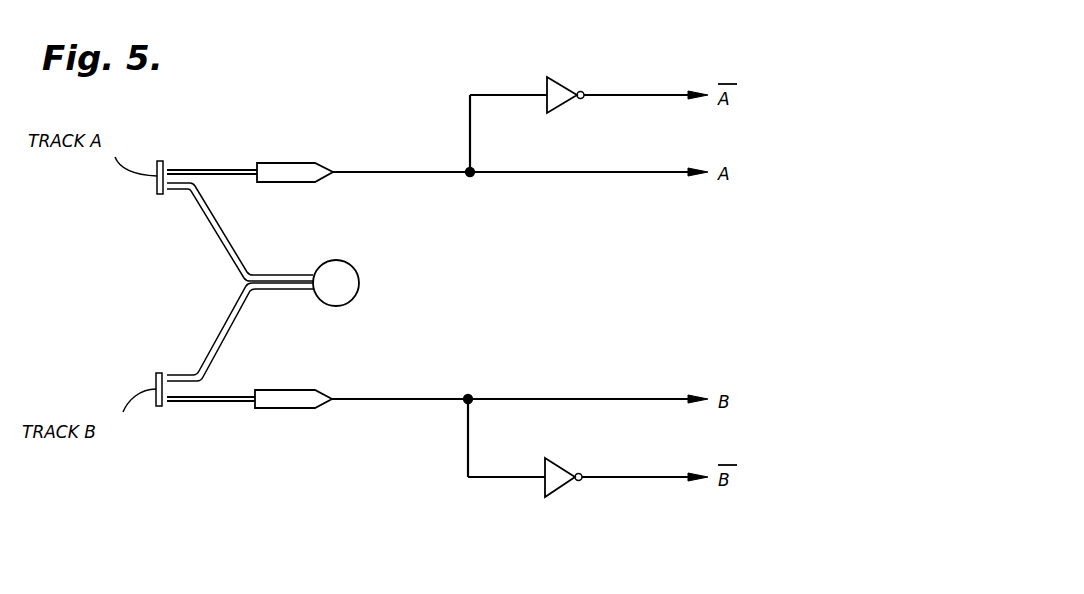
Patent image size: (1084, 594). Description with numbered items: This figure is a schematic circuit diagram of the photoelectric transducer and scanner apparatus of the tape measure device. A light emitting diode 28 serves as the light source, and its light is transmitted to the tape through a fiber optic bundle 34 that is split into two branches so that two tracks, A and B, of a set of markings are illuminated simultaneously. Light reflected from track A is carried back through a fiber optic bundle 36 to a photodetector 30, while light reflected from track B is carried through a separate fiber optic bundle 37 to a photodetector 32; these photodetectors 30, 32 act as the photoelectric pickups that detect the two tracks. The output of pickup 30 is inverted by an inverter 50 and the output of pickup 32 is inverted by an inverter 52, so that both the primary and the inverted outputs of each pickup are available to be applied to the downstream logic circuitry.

The light emitting diode 28 is at (350, 267).
The photodetector 30 is at (313, 182).
The photodetector 32 is at (297, 390).
The fiber optic bundle 34 is at (255, 291).
The fiber optic bundle 36 is at (192, 170).
The fiber optic bundle 37 is at (210, 402).
The inverter 50 is at (562, 83).
The inverter 52 is at (557, 492).